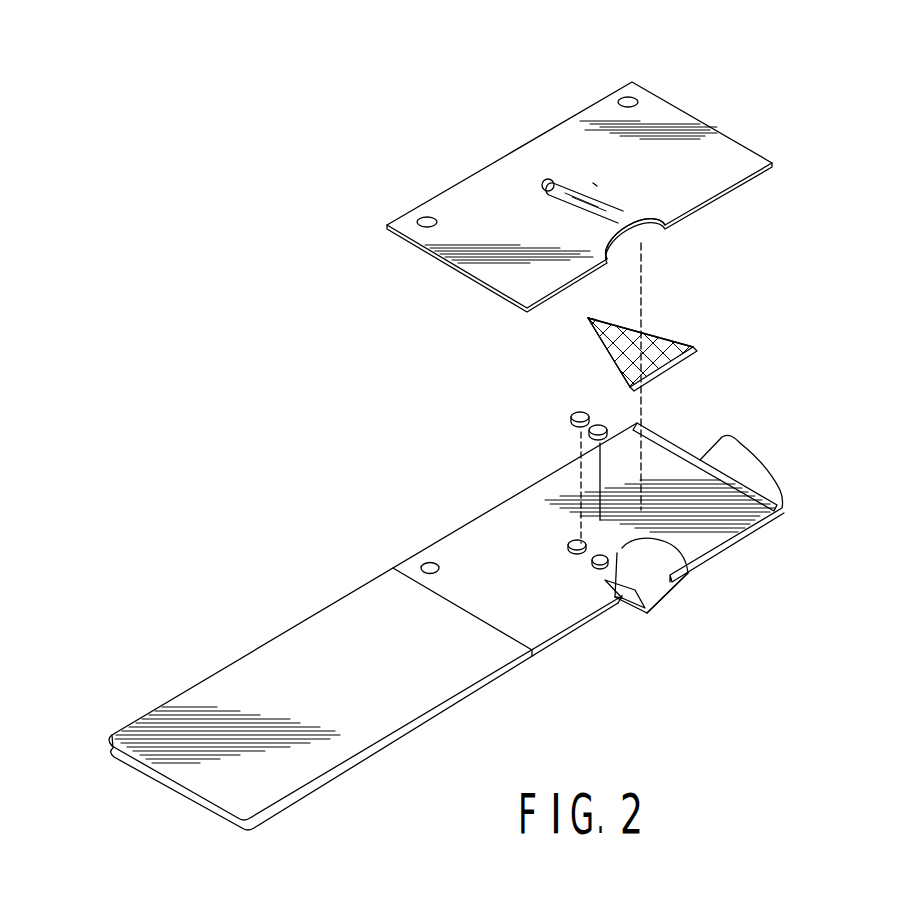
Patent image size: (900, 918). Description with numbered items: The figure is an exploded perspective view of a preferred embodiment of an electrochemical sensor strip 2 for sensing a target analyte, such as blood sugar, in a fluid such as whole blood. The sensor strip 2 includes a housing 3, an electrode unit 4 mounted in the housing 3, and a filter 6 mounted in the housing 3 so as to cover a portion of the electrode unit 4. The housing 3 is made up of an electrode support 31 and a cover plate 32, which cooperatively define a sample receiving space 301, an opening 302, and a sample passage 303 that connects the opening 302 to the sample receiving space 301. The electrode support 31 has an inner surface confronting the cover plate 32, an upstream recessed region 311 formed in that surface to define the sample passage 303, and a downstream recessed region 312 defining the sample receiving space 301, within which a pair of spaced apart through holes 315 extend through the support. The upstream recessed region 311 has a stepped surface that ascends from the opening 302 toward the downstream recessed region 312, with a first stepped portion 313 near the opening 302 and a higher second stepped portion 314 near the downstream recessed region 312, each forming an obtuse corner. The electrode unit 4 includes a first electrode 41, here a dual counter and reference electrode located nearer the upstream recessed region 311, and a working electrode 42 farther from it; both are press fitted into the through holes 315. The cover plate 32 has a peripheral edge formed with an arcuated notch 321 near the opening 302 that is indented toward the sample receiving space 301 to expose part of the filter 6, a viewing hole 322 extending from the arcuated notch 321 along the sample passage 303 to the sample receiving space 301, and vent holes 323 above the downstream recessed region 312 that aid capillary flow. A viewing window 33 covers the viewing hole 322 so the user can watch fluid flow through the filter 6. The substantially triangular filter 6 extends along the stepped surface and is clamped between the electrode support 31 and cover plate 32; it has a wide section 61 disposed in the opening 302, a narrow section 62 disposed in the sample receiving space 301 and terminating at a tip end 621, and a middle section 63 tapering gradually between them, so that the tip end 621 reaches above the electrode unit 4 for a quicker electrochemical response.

The electrochemical sensor strip 2 is at (772, 143).
The cover plate 32 is at (412, 249).
The arcuated notch 321 is at (652, 222).
The viewing hole 322 is at (593, 183).
The vent holes 323 is at (541, 182).
The viewing window 33 is at (577, 214).
The filter 6 is at (690, 330).
The wide section 61 is at (693, 347).
The narrow section 62 is at (590, 319).
The tip end 621 is at (588, 320).
The middle section 63 is at (653, 332).
The electrode unit 4 is at (560, 411).
The first electrode 41 is at (592, 436).
The working electrode 42 is at (572, 420).
The housing 3 is at (391, 564).
The electrode support 31 is at (348, 594).
The sample receiving space 301 is at (582, 560).
The opening 302 is at (662, 600).
The sample passage 303 is at (603, 580).
The upstream recessed region 311 is at (617, 596).
The downstream recessed region 312 is at (592, 578).
The first stepped portion 313 is at (690, 583).
The second stepped portion 314 is at (700, 550).
The through holes 315 is at (572, 546).